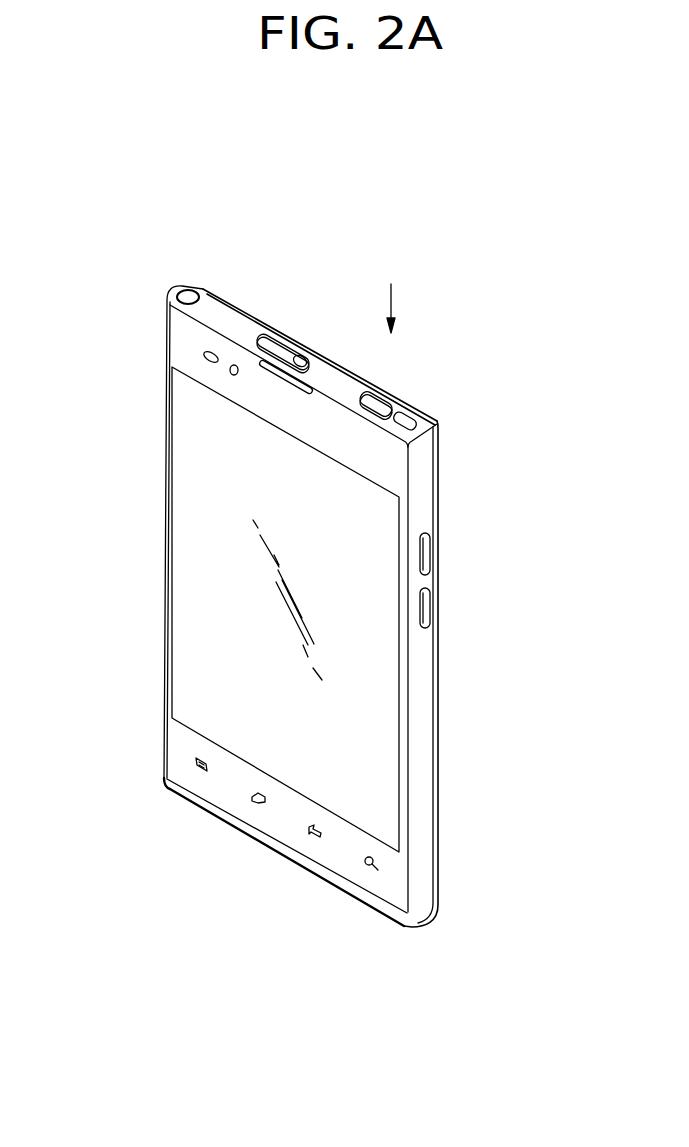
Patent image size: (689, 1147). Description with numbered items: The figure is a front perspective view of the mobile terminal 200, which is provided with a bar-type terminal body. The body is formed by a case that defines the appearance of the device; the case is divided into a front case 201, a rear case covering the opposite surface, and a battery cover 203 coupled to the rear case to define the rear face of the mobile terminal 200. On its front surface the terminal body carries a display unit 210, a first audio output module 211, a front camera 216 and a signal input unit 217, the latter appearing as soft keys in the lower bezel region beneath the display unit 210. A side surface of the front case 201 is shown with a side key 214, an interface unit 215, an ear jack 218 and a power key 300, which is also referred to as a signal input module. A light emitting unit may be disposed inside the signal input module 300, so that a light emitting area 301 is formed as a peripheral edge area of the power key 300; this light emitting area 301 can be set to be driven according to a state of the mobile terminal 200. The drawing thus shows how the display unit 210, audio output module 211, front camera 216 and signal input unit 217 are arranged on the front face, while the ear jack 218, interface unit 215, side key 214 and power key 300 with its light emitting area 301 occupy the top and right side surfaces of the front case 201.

The mobile terminal 200 is at (148, 480).
The front case 201 is at (415, 870).
The battery cover 203 is at (436, 843).
The display unit 210 is at (188, 578).
The first audio output module 211 is at (308, 386).
The side key 214 is at (425, 557).
The interface unit 215 is at (285, 350).
The front camera 216 is at (235, 364).
The signal input unit 217 is at (195, 760).
The ear jack 218 is at (189, 290).
The power key 300 is at (376, 402).
The light emitting area 301 is at (397, 408).